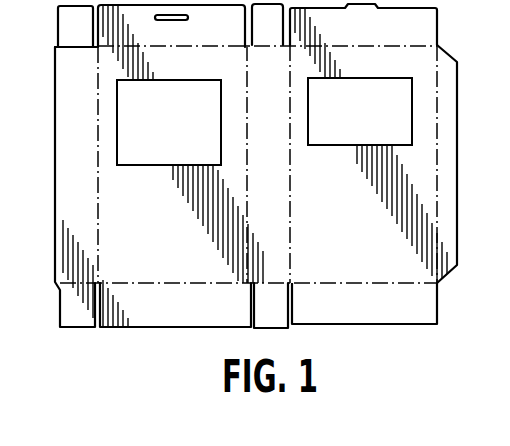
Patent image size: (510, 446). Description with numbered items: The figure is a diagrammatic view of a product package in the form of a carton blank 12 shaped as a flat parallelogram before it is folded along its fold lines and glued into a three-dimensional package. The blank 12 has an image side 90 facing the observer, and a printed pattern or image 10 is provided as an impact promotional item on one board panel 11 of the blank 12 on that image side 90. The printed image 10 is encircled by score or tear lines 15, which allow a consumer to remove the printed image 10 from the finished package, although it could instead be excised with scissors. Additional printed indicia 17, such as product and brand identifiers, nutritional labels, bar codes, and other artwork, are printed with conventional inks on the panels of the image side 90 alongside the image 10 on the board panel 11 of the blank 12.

The printed image 10 is at (372, 84).
The board panel 11 is at (425, 192).
The carton blank 12 is at (457, 141).
The score or tear lines 15 is at (412, 101).
The printed indicia 17 is at (162, 160).
The image side 90 is at (373, 273).